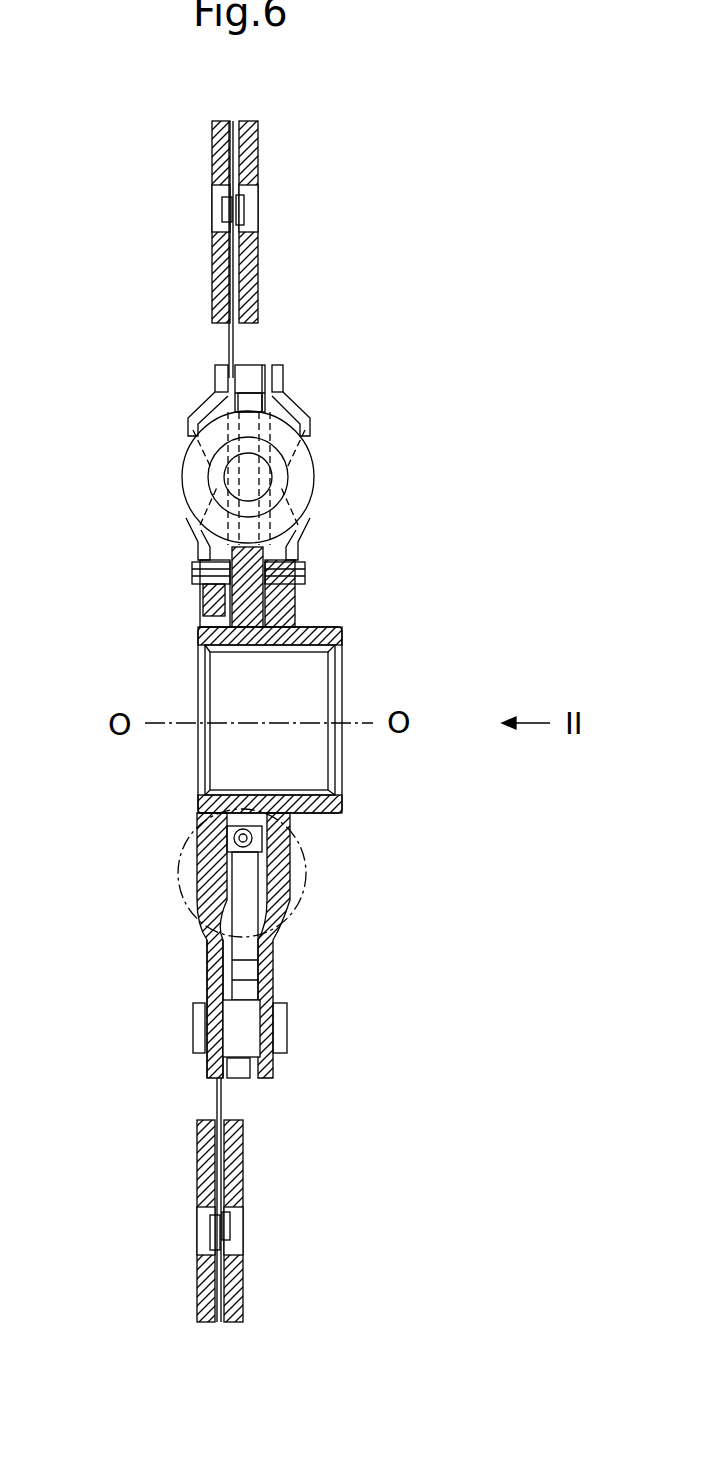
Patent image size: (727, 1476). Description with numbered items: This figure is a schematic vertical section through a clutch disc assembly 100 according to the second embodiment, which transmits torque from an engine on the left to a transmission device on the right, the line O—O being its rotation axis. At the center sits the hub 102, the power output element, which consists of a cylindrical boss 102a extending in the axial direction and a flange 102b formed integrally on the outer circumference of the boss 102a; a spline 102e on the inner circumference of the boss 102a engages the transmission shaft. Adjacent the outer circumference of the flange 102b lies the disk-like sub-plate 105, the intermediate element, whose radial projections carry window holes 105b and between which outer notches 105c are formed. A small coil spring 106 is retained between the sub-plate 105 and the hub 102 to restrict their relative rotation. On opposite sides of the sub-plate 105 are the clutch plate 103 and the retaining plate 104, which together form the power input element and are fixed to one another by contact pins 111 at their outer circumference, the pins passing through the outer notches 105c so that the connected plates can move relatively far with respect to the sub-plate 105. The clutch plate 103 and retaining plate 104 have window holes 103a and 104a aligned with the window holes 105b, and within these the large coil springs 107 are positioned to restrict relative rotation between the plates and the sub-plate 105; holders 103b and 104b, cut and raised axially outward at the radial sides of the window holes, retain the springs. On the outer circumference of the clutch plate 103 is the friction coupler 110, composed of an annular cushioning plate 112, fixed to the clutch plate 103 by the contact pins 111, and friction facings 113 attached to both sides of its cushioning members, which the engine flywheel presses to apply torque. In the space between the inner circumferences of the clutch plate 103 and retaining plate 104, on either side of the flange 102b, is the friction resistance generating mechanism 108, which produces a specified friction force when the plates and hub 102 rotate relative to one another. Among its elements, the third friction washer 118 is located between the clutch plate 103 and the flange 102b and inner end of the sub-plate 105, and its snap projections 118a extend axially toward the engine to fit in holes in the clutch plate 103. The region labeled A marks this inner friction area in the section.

The clutch disc assembly 100 is at (392, 378).
The hub 102 is at (336, 632).
The cylindrical boss 102a is at (335, 818).
The flange 102b is at (205, 615).
The spline 102e is at (280, 648).
The clutch plate 103 is at (205, 920).
The window hole 103a is at (184, 447).
The holder 103b is at (190, 425).
The retaining plate 104 is at (290, 935).
The window hole 104a is at (314, 449).
The holder 104b is at (307, 427).
The sub-plate 105 is at (262, 368).
The window hole 105b is at (250, 408).
The outer notch 105c is at (238, 1078).
The small coil spring 106 is at (230, 838).
The large coil spring 107 is at (316, 491).
The friction resistance generating mechanism 108 is at (299, 567).
The friction coupler 110 is at (283, 162).
The contact pin 111 is at (245, 1033).
The cushioning plate 112 is at (225, 340).
The friction facing 113 is at (207, 1175).
The third friction washer 118 is at (205, 595).
The snap projection 118a is at (200, 570).
The detail region A is at (305, 853).